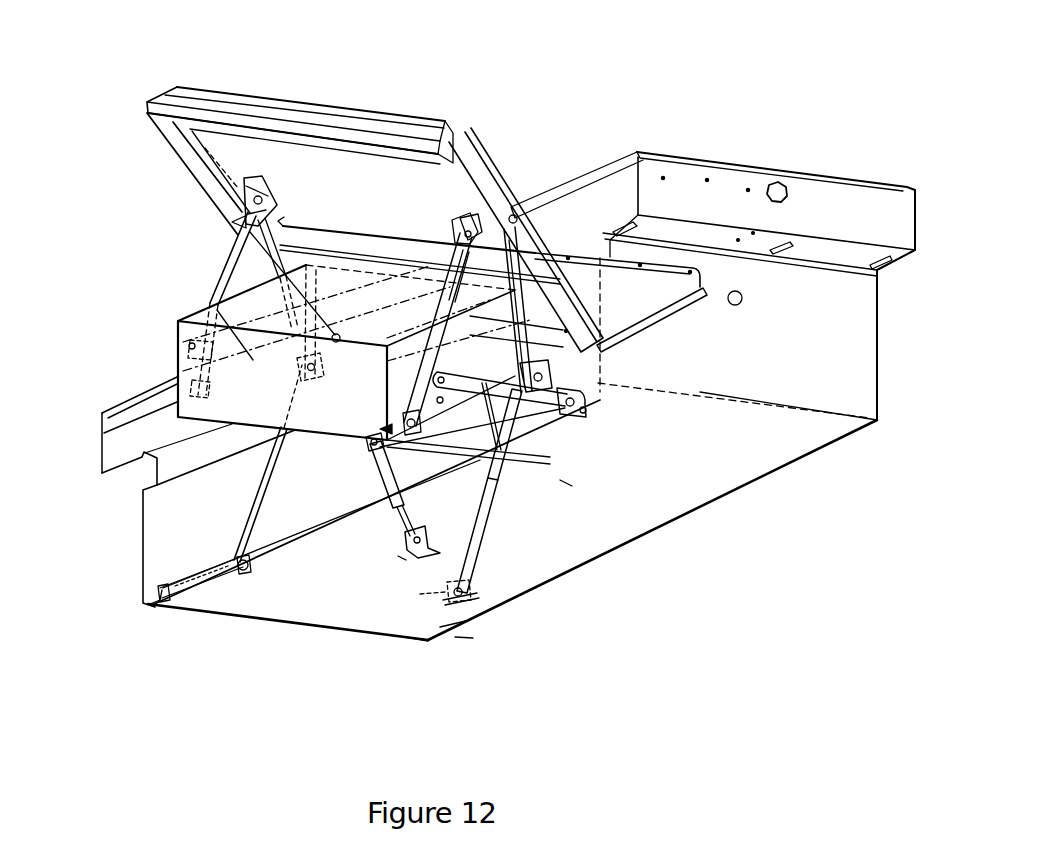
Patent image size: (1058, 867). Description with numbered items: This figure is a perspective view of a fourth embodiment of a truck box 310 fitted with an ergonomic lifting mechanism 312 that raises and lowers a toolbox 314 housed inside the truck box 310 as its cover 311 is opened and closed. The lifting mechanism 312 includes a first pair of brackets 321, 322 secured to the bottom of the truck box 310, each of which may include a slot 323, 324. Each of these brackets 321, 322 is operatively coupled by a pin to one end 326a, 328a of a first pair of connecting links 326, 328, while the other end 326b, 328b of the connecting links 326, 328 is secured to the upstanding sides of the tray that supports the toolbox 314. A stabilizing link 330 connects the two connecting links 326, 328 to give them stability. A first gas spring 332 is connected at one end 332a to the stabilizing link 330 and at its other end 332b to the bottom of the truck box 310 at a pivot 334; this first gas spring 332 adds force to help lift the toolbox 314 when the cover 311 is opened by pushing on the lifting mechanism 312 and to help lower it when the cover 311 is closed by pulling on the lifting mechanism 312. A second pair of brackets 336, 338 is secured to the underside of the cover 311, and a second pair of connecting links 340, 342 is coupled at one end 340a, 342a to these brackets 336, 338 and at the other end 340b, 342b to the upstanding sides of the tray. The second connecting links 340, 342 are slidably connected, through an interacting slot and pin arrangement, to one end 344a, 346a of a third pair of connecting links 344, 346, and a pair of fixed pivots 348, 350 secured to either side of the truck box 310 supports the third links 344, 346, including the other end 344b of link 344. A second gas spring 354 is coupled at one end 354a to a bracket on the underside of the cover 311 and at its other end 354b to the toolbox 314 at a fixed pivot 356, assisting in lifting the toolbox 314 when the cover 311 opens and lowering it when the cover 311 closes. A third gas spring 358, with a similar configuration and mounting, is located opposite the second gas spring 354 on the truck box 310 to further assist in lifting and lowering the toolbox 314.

The truck box 310 is at (785, 103).
The cover 311 is at (380, 103).
The lifting mechanism 312 is at (616, 552).
The toolbox 314 is at (152, 350).
The first bracket 321 is at (455, 637).
The first bracket 322 is at (190, 582).
The slot 323 is at (421, 638).
The slot 324 is at (172, 612).
The first connecting link 326 is at (486, 542).
The one end of connecting link 326a is at (490, 589).
The other end of connecting link 326b is at (580, 499).
The first connecting link 328 is at (256, 519).
The one end of connecting link 328a is at (235, 603).
The other end of connecting link 328b is at (346, 337).
The stabilizing link 330 is at (393, 490).
The first gas spring 332 is at (388, 522).
The one end of first gas spring 332a is at (355, 468).
The other end of first gas spring 332b is at (385, 562).
The pivot 334 is at (420, 562).
The second bracket 336 is at (459, 216).
The second bracket 338 is at (272, 197).
The second connecting link 340 is at (456, 286).
The one end of connecting link 340a is at (476, 207).
The other end of connecting link 340b is at (353, 460).
The second connecting link 342 is at (228, 264).
The one end of connecting link 342a is at (222, 225).
The other end of connecting link 342b is at (166, 392).
The third connecting link 344 is at (498, 460).
The one end of connecting link 344a is at (450, 410).
The other end of connecting link 344b is at (595, 424).
The third connecting link 346 is at (214, 305).
The one end of connecting link 346a is at (177, 340).
The fixed pivot 348 is at (590, 405).
The fixed pivot 350 is at (306, 382).
The second gas spring 354 is at (514, 247).
The one end of second gas spring 354a is at (515, 208).
The other end of second gas spring 354b is at (615, 343).
The fixed pivot 356 is at (590, 380).
The third gas spring 358 is at (292, 224).